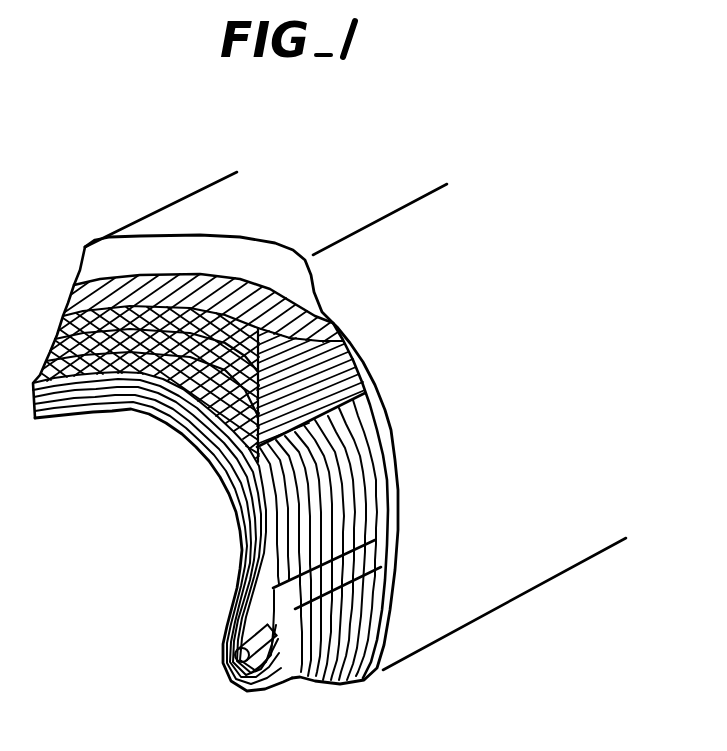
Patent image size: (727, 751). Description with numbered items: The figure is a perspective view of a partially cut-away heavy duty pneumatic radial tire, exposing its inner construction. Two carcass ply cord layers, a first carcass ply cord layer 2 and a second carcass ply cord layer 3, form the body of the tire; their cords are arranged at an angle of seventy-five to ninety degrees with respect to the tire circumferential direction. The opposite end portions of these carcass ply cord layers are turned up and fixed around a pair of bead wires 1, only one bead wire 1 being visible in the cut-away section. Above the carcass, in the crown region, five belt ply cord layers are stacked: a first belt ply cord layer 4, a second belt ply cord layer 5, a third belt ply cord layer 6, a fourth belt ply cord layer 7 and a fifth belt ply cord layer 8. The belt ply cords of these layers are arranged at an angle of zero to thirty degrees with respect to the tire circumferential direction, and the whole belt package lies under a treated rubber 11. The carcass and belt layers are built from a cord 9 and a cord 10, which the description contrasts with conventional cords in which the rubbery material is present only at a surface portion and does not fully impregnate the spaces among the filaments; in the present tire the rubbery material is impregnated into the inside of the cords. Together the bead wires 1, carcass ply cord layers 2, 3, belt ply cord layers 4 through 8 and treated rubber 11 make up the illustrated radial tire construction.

The bead wire 1 is at (238, 663).
The first carcass ply cord layer 2 is at (228, 617).
The second carcass ply cord layer 3 is at (263, 544).
The first belt ply cord layer 4 is at (183, 375).
The second belt ply cord layer 5 is at (133, 350).
The third belt ply cord layer 6 is at (100, 340).
The fourth belt ply cord layer 7 is at (333, 321).
The fifth belt ply cord layer 8 is at (253, 297).
The cord 9 is at (363, 477).
The cord 10 is at (358, 381).
The treated rubber 11 is at (192, 250).